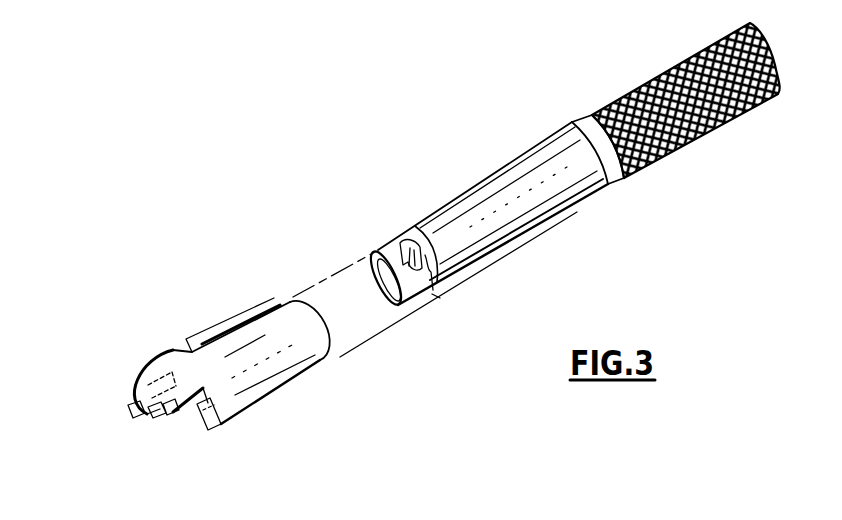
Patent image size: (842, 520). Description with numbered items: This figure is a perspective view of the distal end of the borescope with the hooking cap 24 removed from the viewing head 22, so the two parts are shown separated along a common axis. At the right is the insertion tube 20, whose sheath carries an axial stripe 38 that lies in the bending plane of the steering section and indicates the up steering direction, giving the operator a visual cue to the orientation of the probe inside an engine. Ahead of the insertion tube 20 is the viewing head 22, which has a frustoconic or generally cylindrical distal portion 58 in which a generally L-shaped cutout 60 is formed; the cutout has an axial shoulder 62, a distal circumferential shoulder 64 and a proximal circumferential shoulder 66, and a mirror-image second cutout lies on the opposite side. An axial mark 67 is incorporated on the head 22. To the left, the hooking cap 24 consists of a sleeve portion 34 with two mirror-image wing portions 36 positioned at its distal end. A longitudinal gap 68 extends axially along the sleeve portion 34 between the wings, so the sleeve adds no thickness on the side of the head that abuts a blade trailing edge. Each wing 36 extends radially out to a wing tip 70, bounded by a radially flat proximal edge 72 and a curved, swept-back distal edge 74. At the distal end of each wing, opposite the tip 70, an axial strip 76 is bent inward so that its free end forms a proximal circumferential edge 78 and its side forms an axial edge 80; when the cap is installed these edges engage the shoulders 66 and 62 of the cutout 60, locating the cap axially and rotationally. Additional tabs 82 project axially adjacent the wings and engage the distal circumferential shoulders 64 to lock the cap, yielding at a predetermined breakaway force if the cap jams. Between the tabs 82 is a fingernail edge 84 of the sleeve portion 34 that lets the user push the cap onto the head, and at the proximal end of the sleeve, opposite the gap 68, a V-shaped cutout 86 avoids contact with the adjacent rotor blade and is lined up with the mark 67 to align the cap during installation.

The insertion tube 20 is at (676, 64).
The viewing head 22 is at (417, 145).
The hooking cap 24 is at (308, 380).
The sleeve portion 34 is at (265, 373).
The wing portions 36 is at (150, 372).
The stripe 38 is at (694, 143).
The distal portion 58 is at (383, 243).
The L-shaped cutout 60 is at (377, 273).
The axial shoulder 62 is at (431, 303).
The distal circumferential shoulder 64 is at (407, 243).
The proximal circumferential shoulder 66 is at (432, 298).
The axial mark 67 is at (527, 238).
The longitudinal gap 68 is at (224, 321).
The wing tip 70 is at (176, 352).
The proximal edge 72 is at (186, 345).
The distal edge 74 is at (137, 374).
The axial strip 76 is at (128, 416).
The proximal circumferential edge 78 is at (146, 352).
The axial edge 80 is at (143, 420).
The tabs 82 is at (178, 420).
The fingernail edge 84 is at (214, 436).
The V-shaped cutout 86 is at (340, 378).